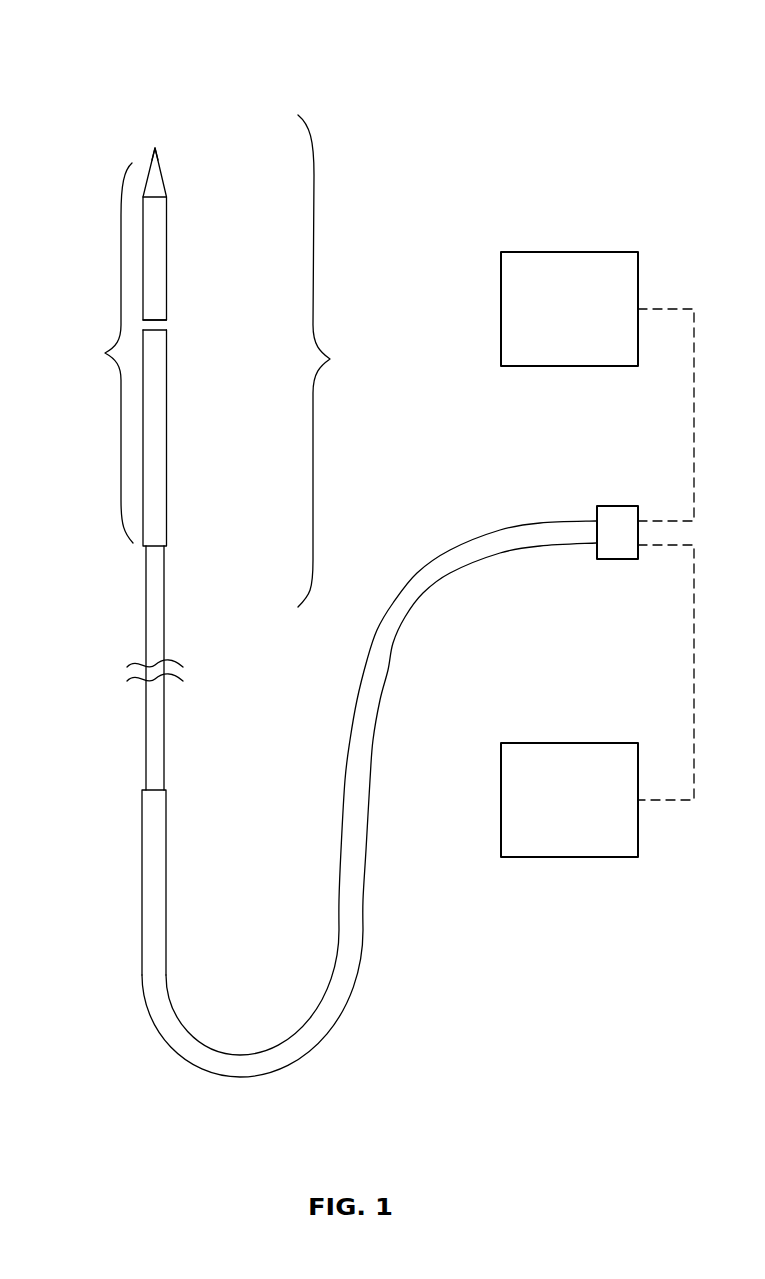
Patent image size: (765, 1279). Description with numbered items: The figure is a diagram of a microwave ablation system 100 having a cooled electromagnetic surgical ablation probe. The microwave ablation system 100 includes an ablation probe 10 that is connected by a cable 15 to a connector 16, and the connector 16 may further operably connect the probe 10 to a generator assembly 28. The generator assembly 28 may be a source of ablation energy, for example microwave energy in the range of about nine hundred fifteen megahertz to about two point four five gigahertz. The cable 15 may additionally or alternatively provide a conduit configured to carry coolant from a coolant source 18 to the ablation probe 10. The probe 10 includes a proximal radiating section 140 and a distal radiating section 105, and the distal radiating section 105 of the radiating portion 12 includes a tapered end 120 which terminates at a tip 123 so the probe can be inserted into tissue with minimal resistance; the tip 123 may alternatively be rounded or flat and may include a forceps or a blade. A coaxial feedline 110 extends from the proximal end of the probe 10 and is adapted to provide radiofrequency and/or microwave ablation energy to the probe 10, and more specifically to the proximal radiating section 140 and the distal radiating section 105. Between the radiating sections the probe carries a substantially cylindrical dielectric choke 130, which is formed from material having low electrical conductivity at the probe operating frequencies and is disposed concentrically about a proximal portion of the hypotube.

The microwave ablation system 100 is at (552, 40).
The ablation probe 10 is at (333, 361).
The radiating portion 12 is at (104, 353).
The tapered end 120 is at (148, 164).
The tip 123 is at (155, 148).
The distal radiating section 105 is at (206, 244).
The dielectric choke 130 is at (166, 327).
The proximal radiating section 140 is at (202, 434).
The coaxial feedline 110 is at (166, 616).
The cable 15 is at (142, 862).
The connector 16 is at (617, 506).
The coolant source 18 is at (568, 252).
The generator assembly 28 is at (568, 743).